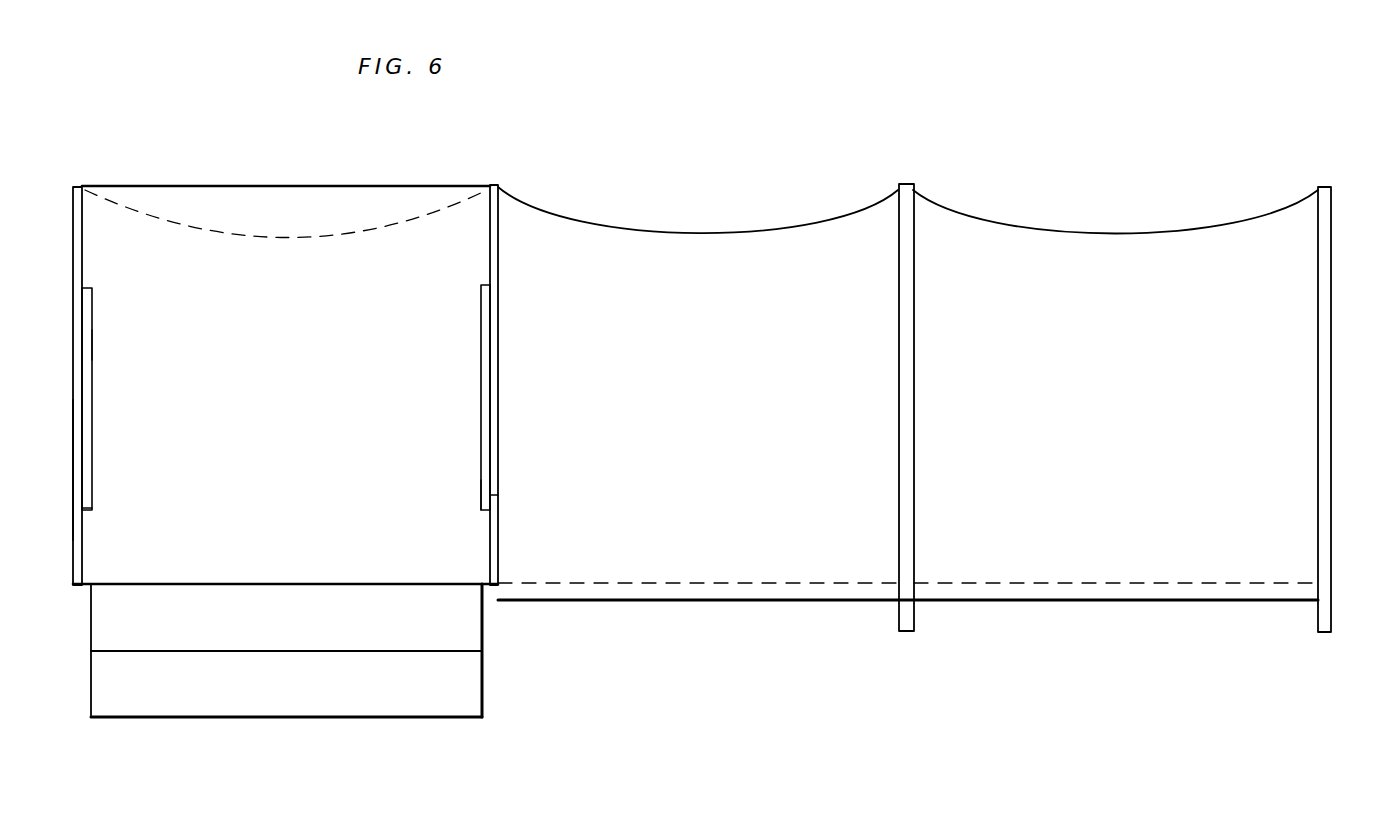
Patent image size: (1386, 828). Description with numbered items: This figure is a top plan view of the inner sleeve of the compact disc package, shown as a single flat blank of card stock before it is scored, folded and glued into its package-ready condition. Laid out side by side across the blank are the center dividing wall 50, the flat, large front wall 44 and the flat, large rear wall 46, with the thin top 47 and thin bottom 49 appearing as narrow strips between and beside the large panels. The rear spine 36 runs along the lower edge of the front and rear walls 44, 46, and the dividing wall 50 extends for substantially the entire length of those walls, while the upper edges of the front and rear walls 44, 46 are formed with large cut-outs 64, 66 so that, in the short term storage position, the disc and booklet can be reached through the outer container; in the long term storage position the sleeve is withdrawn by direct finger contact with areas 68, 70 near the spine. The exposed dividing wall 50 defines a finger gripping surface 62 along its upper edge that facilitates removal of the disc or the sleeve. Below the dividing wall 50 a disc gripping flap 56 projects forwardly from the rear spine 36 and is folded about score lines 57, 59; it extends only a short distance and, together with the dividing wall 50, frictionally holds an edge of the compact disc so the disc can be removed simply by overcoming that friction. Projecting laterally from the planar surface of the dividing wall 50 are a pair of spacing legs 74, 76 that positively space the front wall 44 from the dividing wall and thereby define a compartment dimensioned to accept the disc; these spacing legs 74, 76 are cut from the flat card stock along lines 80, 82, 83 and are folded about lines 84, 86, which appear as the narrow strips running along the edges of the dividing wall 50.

The rear spine 36 is at (654, 595).
The front wall 44 is at (686, 460).
The rear wall 46 is at (1106, 439).
The top 47 is at (910, 565).
The bottom 49 is at (1325, 340).
The center dividing wall 50 is at (295, 432).
The disc gripping flap 56 is at (470, 683).
The score line 57 is at (392, 648).
The score line 59 is at (225, 585).
The finger gripping surface 62 is at (287, 191).
The large cut-out 64 is at (712, 233).
The large cut-out 66 is at (1085, 228).
The finger contact area 68 is at (810, 568).
The finger contact area 70 is at (1182, 568).
The spacing leg 74 is at (84, 310).
The spacing leg 76 is at (475, 300).
The cut line 80 is at (90, 348).
The cut line 82 is at (86, 290).
The cut line 83 is at (90, 512).
The fold line 84 is at (493, 496).
The fold line 86 is at (73, 470).